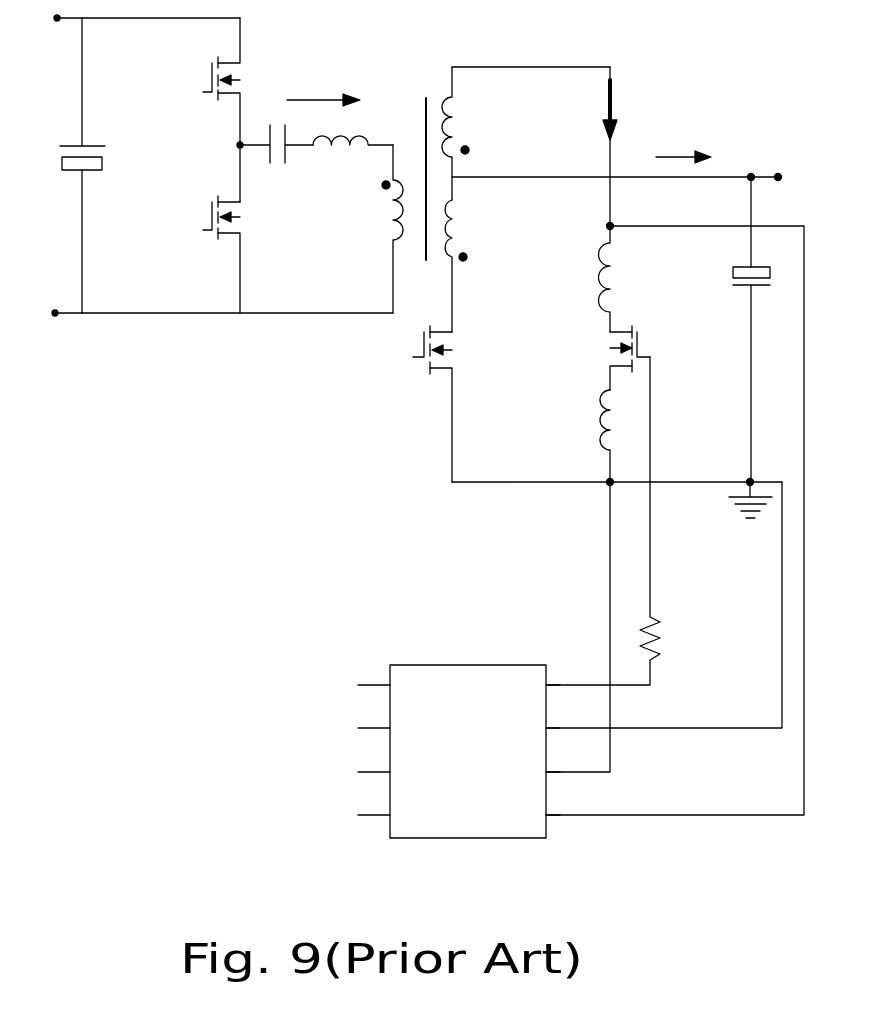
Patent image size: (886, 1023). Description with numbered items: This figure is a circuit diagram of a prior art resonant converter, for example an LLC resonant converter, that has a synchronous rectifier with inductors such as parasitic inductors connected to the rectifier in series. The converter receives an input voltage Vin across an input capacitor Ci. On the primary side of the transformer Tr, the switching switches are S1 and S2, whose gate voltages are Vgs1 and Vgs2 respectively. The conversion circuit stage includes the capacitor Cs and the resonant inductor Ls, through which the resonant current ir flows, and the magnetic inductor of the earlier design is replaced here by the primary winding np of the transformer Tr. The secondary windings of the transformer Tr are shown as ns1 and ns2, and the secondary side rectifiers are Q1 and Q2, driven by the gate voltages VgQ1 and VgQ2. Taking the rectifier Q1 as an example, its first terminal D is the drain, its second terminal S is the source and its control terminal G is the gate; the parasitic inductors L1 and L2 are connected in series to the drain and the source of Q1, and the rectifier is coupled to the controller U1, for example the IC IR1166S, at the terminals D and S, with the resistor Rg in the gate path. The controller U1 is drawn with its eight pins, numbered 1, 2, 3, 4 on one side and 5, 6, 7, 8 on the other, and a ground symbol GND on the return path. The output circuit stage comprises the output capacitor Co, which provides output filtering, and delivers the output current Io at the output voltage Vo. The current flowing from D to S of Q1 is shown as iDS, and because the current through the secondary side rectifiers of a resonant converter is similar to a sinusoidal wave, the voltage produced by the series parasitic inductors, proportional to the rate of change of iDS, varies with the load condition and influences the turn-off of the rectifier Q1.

The input voltage Vin is at (214, 165).
The input capacitor Ci is at (75, 165).
The switching switch S1 is at (238, 110).
The switching switch S2 is at (238, 254).
The gate voltage of S1 Vgs1 is at (176, 73).
The gate voltage of S2 Vgs2 is at (176, 208).
The capacitor Cs is at (276, 157).
The resonant inductor Ls is at (353, 156).
The resonant current ir is at (323, 87).
The primary winding np is at (381, 229).
The transformer Tr is at (421, 166).
The secondary winding ns1 is at (469, 266).
The secondary winding ns2 is at (467, 133).
The synchronous rectifier Q1 is at (611, 358).
The synchronous rectifier Q2 is at (449, 404).
The gate voltage of Q1 VgQ1 is at (675, 343).
The gate voltage of Q2 VgQ2 is at (392, 348).
The current flowing from D to S of Q1 iDS is at (629, 146).
The output current Io is at (683, 143).
The output voltage Vo is at (761, 160).
The first terminal D is at (675, 513).
The second terminal S is at (580, 613).
The control terminal G is at (715, 357).
The parasitic inductor L1 is at (621, 279).
The parasitic inductor L2 is at (619, 450).
The output capacitor Co is at (733, 329).
The ground GND is at (750, 499).
The resistor Rg is at (603, 521).
The controller U1 is at (465, 734).
The VCC pin 1 is at (374, 671).
The OVT pin 2 is at (374, 715).
The MOT pin 3 is at (374, 758).
The EN pin 4 is at (374, 801).
The VD pin 5 is at (559, 801).
The VS pin 6 is at (559, 758).
The GND pin 7 is at (559, 715).
The VGATE pin 8 is at (559, 671).